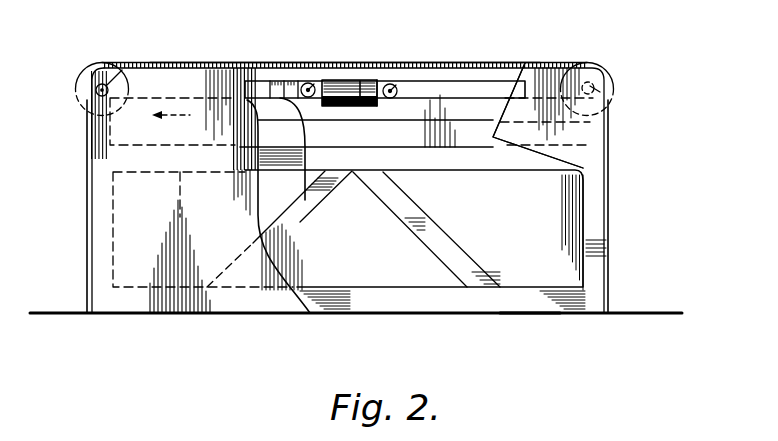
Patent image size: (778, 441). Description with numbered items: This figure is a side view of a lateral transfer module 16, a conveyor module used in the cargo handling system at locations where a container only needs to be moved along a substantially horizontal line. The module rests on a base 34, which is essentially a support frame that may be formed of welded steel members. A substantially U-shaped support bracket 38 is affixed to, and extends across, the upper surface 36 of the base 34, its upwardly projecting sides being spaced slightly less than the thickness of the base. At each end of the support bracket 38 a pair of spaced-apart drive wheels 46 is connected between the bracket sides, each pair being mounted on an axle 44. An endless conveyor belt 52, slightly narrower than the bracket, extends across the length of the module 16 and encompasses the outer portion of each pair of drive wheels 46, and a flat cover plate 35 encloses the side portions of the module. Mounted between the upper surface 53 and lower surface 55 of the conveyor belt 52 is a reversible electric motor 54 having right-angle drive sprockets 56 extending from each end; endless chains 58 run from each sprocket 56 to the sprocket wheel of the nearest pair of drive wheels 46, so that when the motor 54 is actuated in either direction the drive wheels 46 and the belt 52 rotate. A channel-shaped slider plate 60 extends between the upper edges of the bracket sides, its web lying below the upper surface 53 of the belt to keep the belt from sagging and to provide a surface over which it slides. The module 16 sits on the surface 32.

The lateral transfer module 16 is at (544, 325).
The base plate 32 is at (681, 305).
The base 34 is at (87, 228).
The flat cover plate 35 is at (232, 243).
The upper surface 36 is at (437, 152).
The U-shaped support bracket 38 is at (625, 138).
The axle 44 is at (134, 66).
The drive wheels 46 is at (97, 70).
The endless conveyor belt 52 is at (170, 78).
The upper surface 53 is at (232, 62).
The reversible electric motor 54 is at (394, 86).
The lower surface 55 is at (305, 200).
The right-angle drive sprockets 56 is at (309, 83).
The endless chains 58 is at (270, 83).
The slider plate 60 is at (372, 86).